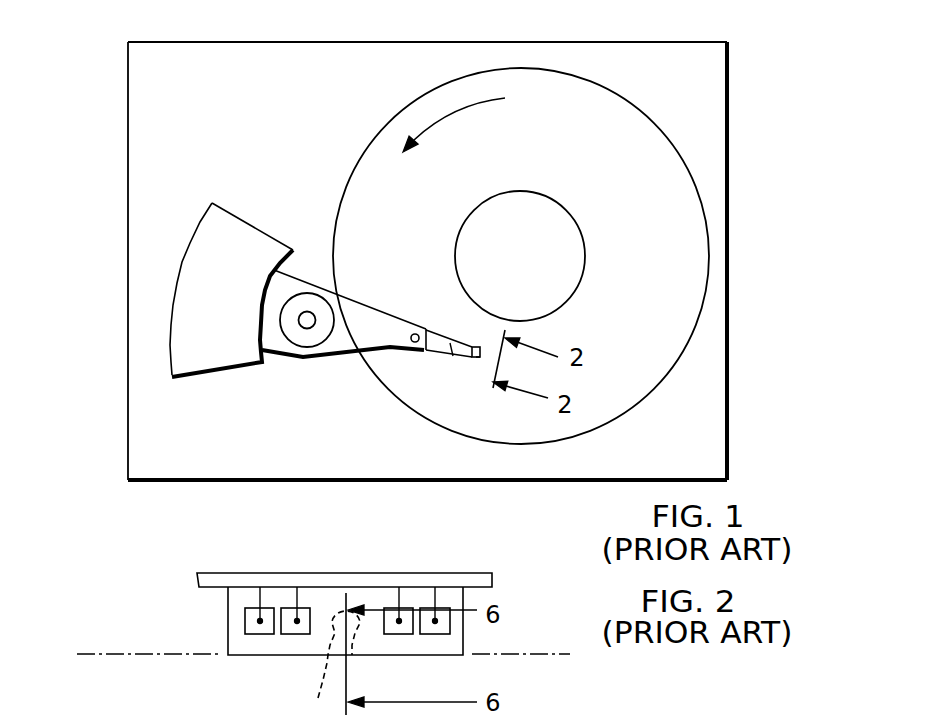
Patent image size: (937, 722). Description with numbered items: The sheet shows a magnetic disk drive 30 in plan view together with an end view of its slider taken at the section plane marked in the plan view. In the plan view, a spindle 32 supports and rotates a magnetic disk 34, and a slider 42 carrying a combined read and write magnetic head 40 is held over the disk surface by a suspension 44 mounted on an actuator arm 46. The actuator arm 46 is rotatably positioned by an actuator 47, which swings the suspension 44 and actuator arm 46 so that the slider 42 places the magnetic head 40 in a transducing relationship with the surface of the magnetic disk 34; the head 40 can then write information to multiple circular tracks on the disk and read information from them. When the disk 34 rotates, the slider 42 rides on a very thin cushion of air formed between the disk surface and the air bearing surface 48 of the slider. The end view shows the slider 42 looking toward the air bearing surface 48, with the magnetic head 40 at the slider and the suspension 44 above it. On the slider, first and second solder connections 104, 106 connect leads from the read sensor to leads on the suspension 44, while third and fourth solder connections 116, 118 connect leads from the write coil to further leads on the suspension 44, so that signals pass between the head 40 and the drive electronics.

In FIG. 1, the magnetic disk drive 30 is at (748, 46).
In FIG. 1, the spindle 32 is at (543, 191).
In FIG. 1, the magnetic disk 34 is at (614, 257).
In FIG. 1, the magnetic head 40 is at (479, 357).
In FIG. 2, the magnetic head 40 is at (318, 698).
In FIG. 1, the slider 42 is at (478, 348).
In FIG. 2, the slider 42 is at (228, 617).
In FIG. 1, the suspension 44 is at (435, 357).
In FIG. 1, the actuator arm 46 is at (352, 297).
In FIG. 1, the actuator 47 is at (247, 222).
In FIG. 2, the air bearing surface 48 is at (120, 655).
In FIG. 2, the first solder connection 104 is at (243, 608).
In FIG. 2, the second solder connection 106 is at (419, 608).
In FIG. 2, the third solder connection 116 is at (279, 608).
In FIG. 2, the fourth solder connection 118 is at (382, 608).